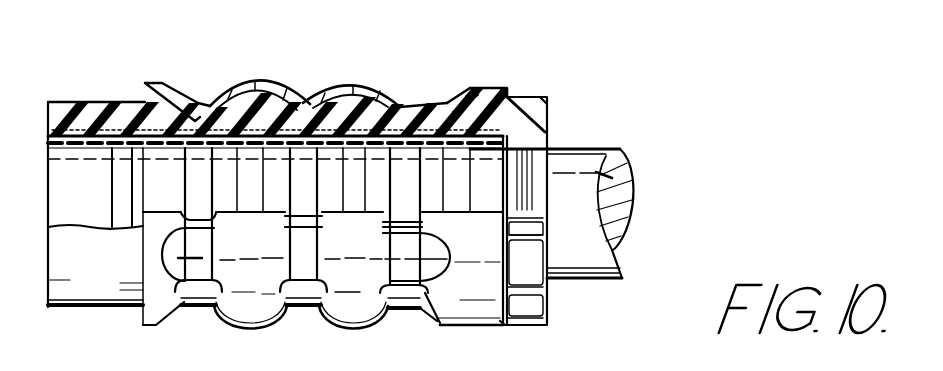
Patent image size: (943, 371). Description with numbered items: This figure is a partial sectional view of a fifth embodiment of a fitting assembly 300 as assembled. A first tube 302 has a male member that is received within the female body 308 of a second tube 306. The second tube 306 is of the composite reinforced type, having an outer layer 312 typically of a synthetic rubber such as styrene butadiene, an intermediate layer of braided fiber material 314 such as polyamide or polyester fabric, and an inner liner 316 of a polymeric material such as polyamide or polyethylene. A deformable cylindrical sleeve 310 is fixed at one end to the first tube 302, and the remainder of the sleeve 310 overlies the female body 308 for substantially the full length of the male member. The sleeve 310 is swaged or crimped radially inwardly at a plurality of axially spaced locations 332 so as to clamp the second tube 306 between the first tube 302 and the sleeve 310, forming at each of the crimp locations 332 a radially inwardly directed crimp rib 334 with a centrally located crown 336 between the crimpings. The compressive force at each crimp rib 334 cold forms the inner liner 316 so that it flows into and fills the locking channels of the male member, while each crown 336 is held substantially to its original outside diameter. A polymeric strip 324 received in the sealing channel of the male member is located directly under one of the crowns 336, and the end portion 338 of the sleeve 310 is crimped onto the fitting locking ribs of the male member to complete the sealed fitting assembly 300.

The fitting assembly 300 is at (582, 75).
The first tube 302 is at (588, 149).
The second tube 306 is at (262, 82).
The female body 308 is at (72, 100).
The sleeve 310 is at (470, 88).
The outer layer 312 is at (130, 112).
The braided fiber material 314 is at (112, 101).
The inner liner 316 is at (73, 145).
The polymeric strip 324 is at (356, 106).
The crimp locations 332 is at (405, 105).
The crimp rib 334 is at (412, 130).
The crown 336 is at (342, 84).
The end portion 338 is at (546, 120).